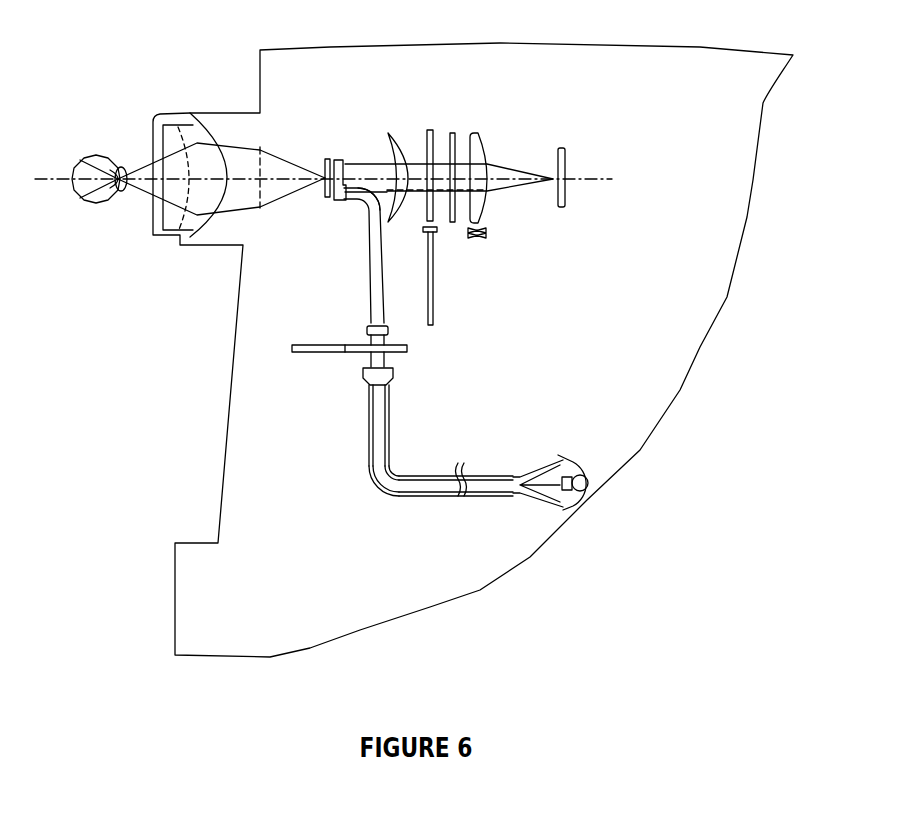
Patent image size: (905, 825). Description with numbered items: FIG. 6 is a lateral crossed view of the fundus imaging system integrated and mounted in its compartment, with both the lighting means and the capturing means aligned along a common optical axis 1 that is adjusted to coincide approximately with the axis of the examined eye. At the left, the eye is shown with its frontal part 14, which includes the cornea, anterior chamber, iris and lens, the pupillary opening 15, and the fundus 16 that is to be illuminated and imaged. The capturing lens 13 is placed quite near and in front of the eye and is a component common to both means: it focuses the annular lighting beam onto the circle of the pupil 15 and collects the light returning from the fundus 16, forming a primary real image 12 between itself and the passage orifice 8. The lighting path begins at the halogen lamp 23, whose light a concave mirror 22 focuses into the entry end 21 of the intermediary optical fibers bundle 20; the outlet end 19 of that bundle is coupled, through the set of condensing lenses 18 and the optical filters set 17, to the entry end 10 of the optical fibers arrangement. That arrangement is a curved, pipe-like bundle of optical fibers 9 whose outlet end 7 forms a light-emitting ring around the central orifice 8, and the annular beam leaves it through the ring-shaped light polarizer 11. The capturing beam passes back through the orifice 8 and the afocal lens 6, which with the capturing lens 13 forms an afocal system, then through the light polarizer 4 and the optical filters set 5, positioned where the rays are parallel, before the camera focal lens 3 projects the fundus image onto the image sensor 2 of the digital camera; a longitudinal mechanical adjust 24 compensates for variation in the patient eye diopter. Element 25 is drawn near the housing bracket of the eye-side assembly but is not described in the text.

The optical axis 1 is at (592, 177).
The image sensor 2 is at (563, 148).
The camera focal lens 3 is at (477, 140).
The light polarizer 4 is at (455, 137).
The optical filters set 5 is at (432, 130).
The afocal lens 6 is at (400, 143).
The optical fibers outlet end 7 is at (322, 160).
The passage orifice 8 is at (342, 163).
The bundle of optical fibers 9 is at (368, 247).
The optical fibers entry end 10 is at (367, 330).
The light polarizer 11 is at (320, 207).
The primary real image 12 is at (270, 153).
The capturing lens 13 is at (187, 133).
The frontal part of the eye 14 is at (120, 167).
The pupillary opening 15 is at (123, 197).
The fundus 16 is at (83, 140).
The optical filters set 17 is at (397, 353).
The condensing lenses set 18 is at (362, 373).
The intermediary bundle outlet end 19 is at (367, 410).
The intermediary optical fibers bundle 20 is at (383, 477).
The intermediary bundle entry end 21 is at (500, 488).
The concave mirror 22 is at (580, 457).
The halogen lamp 23 is at (558, 492).
The longitudinal mechanical adjust 24 is at (477, 238).
The housing bracket 25 is at (170, 213).